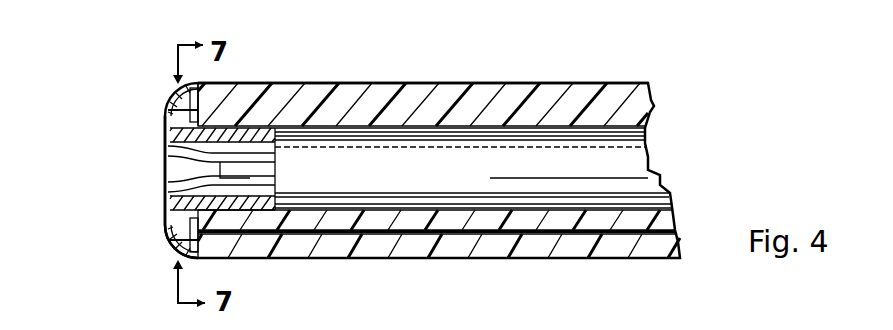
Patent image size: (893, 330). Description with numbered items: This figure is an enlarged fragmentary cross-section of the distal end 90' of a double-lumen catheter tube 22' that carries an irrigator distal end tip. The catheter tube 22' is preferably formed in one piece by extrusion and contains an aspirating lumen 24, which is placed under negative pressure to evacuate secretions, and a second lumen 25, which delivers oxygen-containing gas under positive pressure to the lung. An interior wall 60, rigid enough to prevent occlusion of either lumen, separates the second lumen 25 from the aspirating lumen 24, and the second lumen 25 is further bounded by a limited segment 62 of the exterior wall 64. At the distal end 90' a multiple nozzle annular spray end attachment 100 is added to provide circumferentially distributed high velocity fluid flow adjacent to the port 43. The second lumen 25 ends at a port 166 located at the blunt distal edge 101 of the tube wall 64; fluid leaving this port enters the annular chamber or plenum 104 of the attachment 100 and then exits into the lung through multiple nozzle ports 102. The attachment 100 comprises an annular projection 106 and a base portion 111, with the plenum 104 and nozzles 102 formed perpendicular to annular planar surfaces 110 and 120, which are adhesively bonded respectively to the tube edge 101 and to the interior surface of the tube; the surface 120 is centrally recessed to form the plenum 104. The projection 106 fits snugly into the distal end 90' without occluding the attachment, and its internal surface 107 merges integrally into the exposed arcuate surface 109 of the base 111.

The catheter tube 22' is at (423, 57).
The exterior wall 64 is at (472, 105).
The aspirating lumen 24 is at (517, 140).
The interior wall 60 is at (627, 194).
The second lumen 25 is at (668, 232).
The limited segment of the exterior wall 62 is at (622, 247).
The annular planar surface 120 is at (205, 84).
The distal end 90' is at (252, 82).
The multiple nozzle annular spray end attachment 100 is at (178, 88).
The annular chamber or plenum 104 is at (172, 95).
The nozzle ports 102 is at (180, 103).
The annular planar surface 110 is at (168, 122).
The port 43 is at (176, 134).
The exposed arcuate surface 109 is at (195, 153).
The annular projection 106 is at (168, 180).
The internal surface 107 is at (222, 186).
The blunt distal edge 101 is at (252, 112).
The port 166 is at (182, 249).
The base portion 111 is at (184, 254).